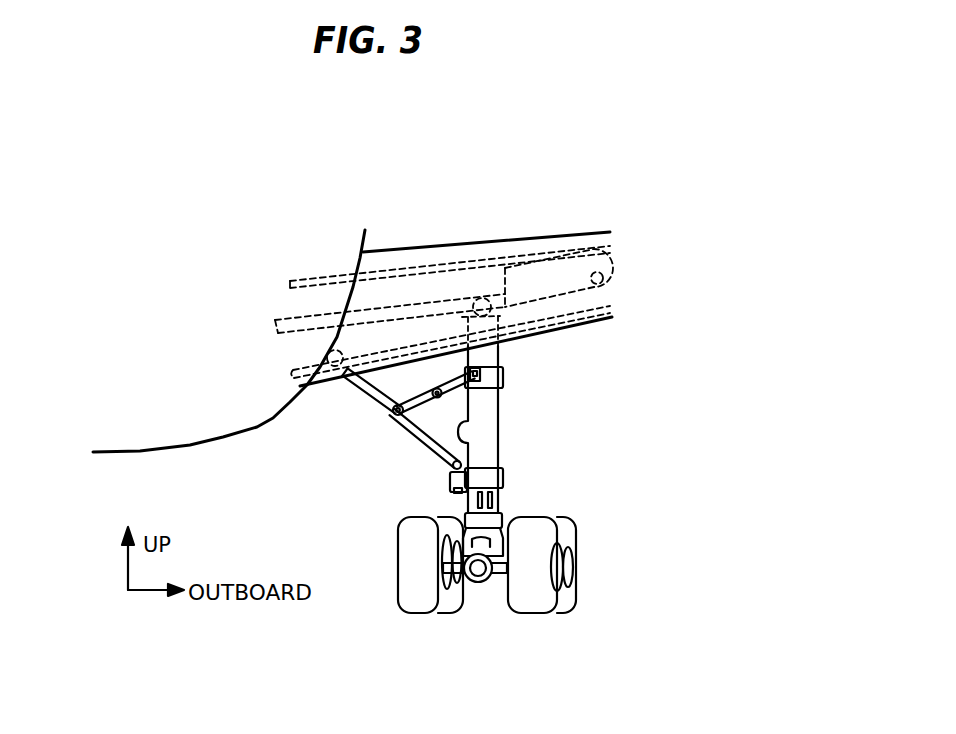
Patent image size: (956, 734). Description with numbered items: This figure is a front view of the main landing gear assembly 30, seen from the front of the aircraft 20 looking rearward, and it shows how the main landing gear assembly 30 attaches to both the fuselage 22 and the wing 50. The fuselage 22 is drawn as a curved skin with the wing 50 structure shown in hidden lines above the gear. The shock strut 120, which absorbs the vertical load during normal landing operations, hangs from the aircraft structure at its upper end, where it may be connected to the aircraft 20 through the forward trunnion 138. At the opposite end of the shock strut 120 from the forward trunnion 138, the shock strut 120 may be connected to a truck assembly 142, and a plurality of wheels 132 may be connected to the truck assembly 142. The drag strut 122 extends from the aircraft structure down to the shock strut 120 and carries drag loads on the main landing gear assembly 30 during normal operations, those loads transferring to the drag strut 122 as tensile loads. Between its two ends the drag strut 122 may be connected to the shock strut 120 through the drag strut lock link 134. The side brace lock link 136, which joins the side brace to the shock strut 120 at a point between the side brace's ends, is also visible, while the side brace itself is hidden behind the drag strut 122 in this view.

The aircraft 20 is at (227, 467).
The fuselage 22 is at (272, 418).
The main landing gear assembly 30 is at (565, 472).
The wing 50 is at (421, 170).
The shock strut 120 is at (498, 430).
The drag strut 122 is at (357, 398).
The wheels 132 is at (558, 516).
The drag strut lock link 134 is at (413, 412).
The side brace lock link 136 is at (453, 391).
The forward trunnion 138 is at (485, 303).
The truck assembly 142 is at (497, 580).